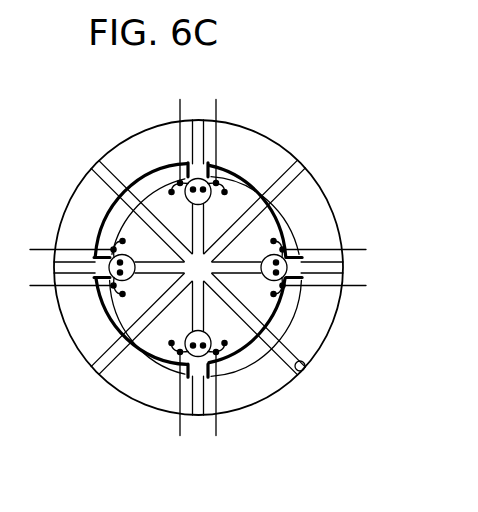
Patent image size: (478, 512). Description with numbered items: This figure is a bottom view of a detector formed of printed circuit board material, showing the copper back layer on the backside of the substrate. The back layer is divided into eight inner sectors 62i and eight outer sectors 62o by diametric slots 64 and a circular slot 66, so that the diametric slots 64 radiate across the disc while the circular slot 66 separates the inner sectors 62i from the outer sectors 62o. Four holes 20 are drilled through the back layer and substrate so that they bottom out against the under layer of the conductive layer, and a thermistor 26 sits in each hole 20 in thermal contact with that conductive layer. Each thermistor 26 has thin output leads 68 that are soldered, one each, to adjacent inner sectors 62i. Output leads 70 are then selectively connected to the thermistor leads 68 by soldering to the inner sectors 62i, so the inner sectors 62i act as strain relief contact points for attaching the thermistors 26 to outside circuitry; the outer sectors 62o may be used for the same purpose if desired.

The outer sectors 62o is at (271, 141).
The inner sectors 62i is at (275, 216).
The circular slot 66 is at (112, 233).
The diametric slots 64 is at (305, 374).
The thin output leads 68 is at (116, 288).
The holes 20 is at (290, 254).
The thermistor 26 is at (283, 268).
The output leads 70 is at (180, 102).